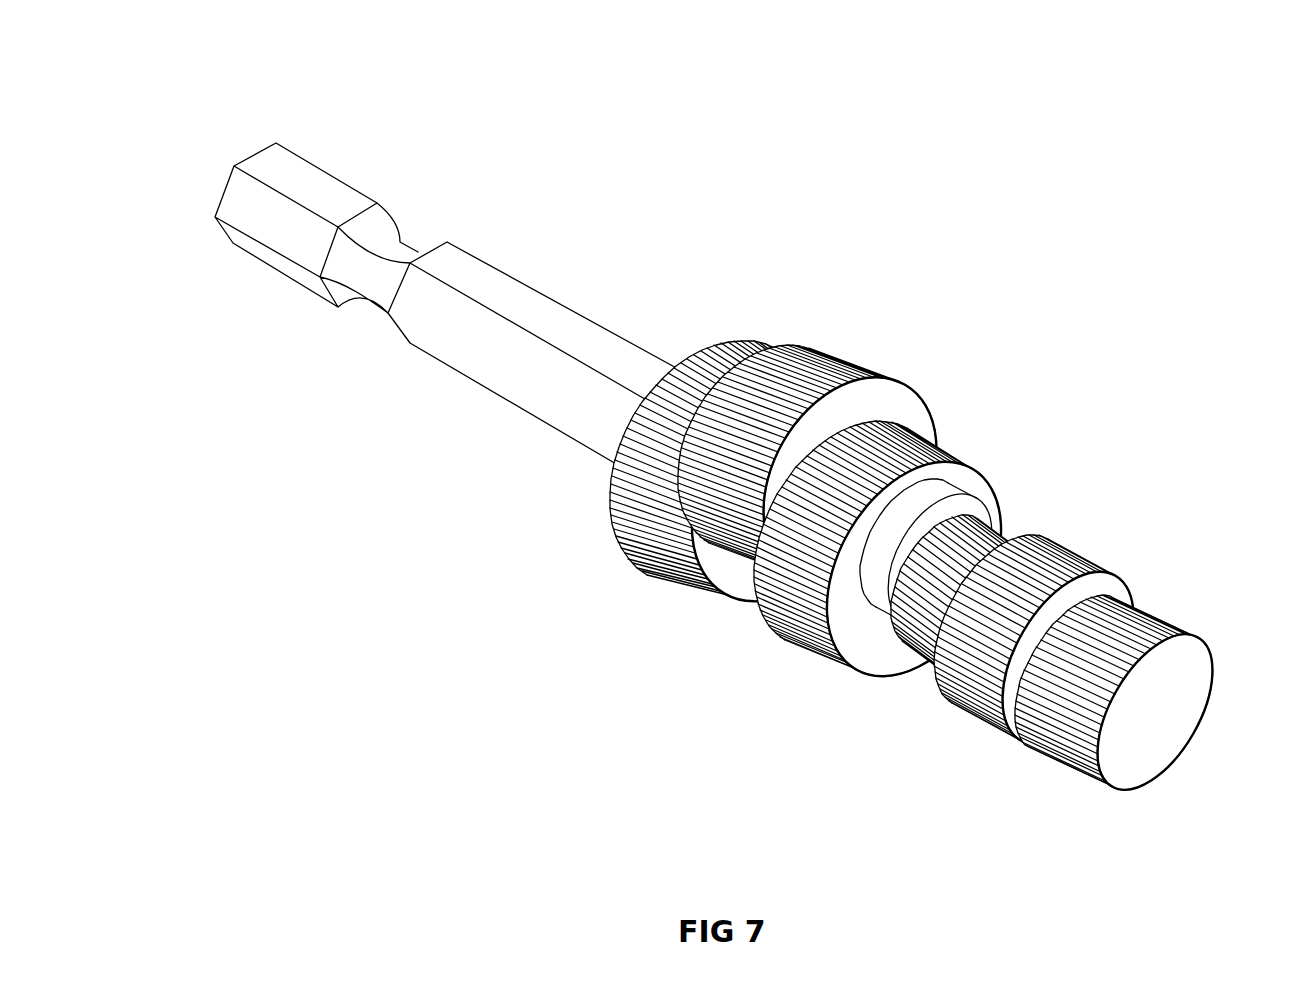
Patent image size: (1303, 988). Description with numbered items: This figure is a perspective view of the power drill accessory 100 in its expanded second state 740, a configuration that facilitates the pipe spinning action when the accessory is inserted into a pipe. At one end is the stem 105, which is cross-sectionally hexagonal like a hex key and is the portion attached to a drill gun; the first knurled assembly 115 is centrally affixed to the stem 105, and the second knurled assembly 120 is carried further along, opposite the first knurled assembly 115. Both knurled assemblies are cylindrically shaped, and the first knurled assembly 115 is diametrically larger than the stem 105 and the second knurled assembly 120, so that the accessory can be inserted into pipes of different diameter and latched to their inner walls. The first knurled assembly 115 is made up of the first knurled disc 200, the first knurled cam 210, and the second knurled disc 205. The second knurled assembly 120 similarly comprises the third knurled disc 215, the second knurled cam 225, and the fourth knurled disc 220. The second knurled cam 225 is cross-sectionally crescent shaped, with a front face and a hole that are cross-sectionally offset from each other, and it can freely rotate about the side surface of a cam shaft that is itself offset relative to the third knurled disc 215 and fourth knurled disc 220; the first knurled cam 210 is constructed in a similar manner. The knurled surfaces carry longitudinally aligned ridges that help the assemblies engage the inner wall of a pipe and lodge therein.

The power drill accessory 100 is at (1136, 139).
The stem 105 is at (263, 143).
The first knurled assembly 115 is at (784, 494).
The second knurled assembly 120 is at (995, 618).
The first knurled disc 200 is at (752, 337).
The first knurled cam 210 is at (845, 352).
The second knurled disc 205 is at (953, 446).
The third knurled disc 215 is at (1004, 523).
The second knurled cam 225 is at (1090, 553).
The fourth knurled disc 220 is at (1175, 622).
The second state 740 is at (320, 513).